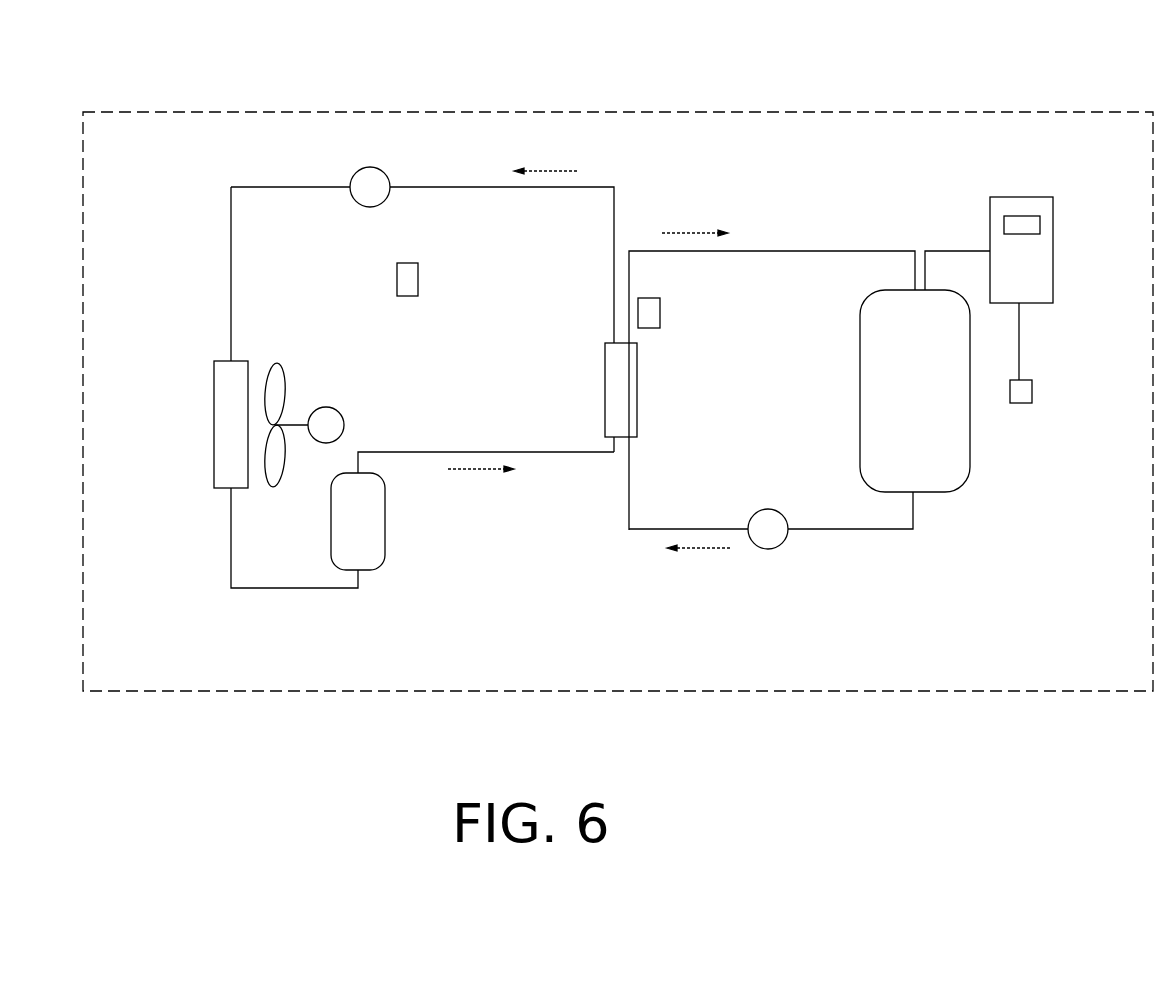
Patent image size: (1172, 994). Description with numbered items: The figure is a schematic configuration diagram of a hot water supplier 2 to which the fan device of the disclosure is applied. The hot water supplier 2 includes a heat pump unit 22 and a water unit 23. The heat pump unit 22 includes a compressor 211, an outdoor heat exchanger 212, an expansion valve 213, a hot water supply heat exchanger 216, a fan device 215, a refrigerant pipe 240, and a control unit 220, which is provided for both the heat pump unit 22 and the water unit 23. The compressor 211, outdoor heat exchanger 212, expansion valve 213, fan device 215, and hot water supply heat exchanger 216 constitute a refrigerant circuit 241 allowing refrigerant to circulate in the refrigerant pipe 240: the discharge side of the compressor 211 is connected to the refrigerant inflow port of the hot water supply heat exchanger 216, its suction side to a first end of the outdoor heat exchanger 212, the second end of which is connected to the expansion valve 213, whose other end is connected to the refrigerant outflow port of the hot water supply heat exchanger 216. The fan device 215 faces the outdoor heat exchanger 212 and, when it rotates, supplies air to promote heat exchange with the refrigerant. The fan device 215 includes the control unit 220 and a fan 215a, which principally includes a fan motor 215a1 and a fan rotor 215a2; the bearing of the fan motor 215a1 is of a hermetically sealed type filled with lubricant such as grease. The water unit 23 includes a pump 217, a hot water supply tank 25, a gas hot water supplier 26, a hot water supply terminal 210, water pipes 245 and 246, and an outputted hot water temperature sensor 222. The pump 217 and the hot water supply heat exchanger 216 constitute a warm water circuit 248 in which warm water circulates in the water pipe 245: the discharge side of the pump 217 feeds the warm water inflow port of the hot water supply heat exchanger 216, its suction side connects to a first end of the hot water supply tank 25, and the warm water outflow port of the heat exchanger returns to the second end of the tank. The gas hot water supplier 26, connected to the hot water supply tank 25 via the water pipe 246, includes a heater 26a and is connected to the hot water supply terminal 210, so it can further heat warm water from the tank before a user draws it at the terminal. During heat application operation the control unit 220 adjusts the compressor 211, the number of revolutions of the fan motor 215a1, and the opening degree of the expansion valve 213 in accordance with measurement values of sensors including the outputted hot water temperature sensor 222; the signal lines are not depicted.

The hot water supplier 2 is at (483, 80).
The refrigerant pipe 240 is at (230, 313).
The refrigerant circuit 241 is at (226, 270).
The outdoor heat exchanger 212 is at (214, 417).
The expansion valve 213 is at (386, 200).
The fan device 215 is at (432, 375).
The fan 215a is at (391, 403).
The fan motor 215a1 is at (328, 407).
The fan rotor 215a2 is at (290, 365).
The control unit 220 is at (420, 278).
The compressor 211 is at (386, 528).
The heat pump unit 22 is at (568, 474).
The hot water supply heat exchanger 216 is at (639, 388).
The outputted hot water temperature sensor 222 is at (662, 322).
The water pipe 245 is at (769, 250).
The warm water circuit 248 is at (850, 243).
The water pipe 246 is at (962, 250).
The gas hot water supplier 26 is at (1058, 260).
The heater 26a is at (1041, 226).
The hot water supply terminal 210 is at (1033, 392).
The hot water supply tank 25 is at (972, 450).
The pump 217 is at (784, 543).
The water unit 23 is at (887, 548).